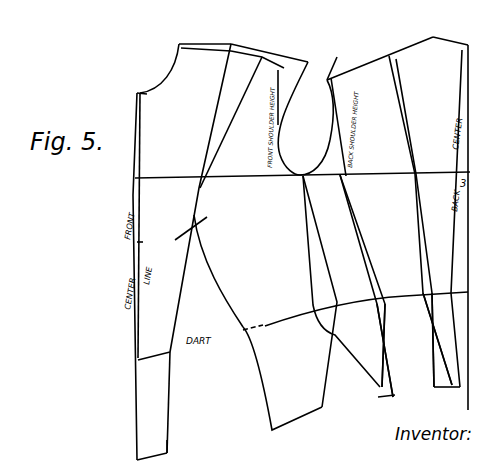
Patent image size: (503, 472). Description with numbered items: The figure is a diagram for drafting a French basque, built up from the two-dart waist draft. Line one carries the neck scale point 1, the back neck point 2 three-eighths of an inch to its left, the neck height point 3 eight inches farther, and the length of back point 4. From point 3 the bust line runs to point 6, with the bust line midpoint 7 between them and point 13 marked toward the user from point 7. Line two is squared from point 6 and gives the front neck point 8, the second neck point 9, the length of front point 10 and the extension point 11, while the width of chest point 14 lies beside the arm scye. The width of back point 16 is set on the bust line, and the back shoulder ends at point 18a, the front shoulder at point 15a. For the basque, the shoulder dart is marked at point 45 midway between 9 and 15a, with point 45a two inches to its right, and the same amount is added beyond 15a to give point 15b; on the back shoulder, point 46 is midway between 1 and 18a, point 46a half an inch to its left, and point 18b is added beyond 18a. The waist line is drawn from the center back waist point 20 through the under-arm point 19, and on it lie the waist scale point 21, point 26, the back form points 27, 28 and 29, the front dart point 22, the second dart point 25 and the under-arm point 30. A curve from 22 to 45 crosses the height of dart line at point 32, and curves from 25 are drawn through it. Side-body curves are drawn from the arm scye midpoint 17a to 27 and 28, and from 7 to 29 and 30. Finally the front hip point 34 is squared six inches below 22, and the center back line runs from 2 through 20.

The neck scale point 1 is at (449, 46).
The back neck point 2 is at (461, 227).
The neck height point 3 is at (143, 102).
The length of back point 4 is at (468, 293).
The bust line end point 6 is at (302, 169).
The bust line midpoint 7 is at (305, 157).
The front neck point 8 is at (380, 60).
The front neck shoulder point 9 is at (165, 68).
The length of front point 10 is at (154, 354).
The front extension point 11 is at (152, 453).
The bust line point 13 is at (226, 198).
The width of chest point 14 is at (277, 147).
The front shoulder end point 15a is at (264, 64).
The front shoulder extension point 15b is at (303, 107).
The width of back point 16 is at (367, 286).
The arm scye midpoint 17a is at (325, 127).
The back shoulder end point 18a is at (332, 62).
The back shoulder extension point 18b is at (317, 110).
The under-arm length point 19 is at (355, 311).
The center back waist point 20 is at (450, 218).
The waist scale point 21 is at (441, 335).
The front dart waist point 22 is at (160, 402).
The second dart waist point 25 is at (282, 378).
The back form waist point 26 is at (430, 335).
The back form point 27 is at (391, 337).
The back form point 28 is at (375, 345).
The back form point 29 is at (327, 291).
The under-arm waist point 30 is at (339, 281).
The height of dart point 32 is at (209, 268).
The front hip point 34 is at (161, 447).
The shoulder dart point 45 is at (205, 48).
The shoulder dart point 45a is at (269, 49).
The back shoulder dart point 46 is at (415, 219).
The back shoulder dart point 46a is at (404, 220).